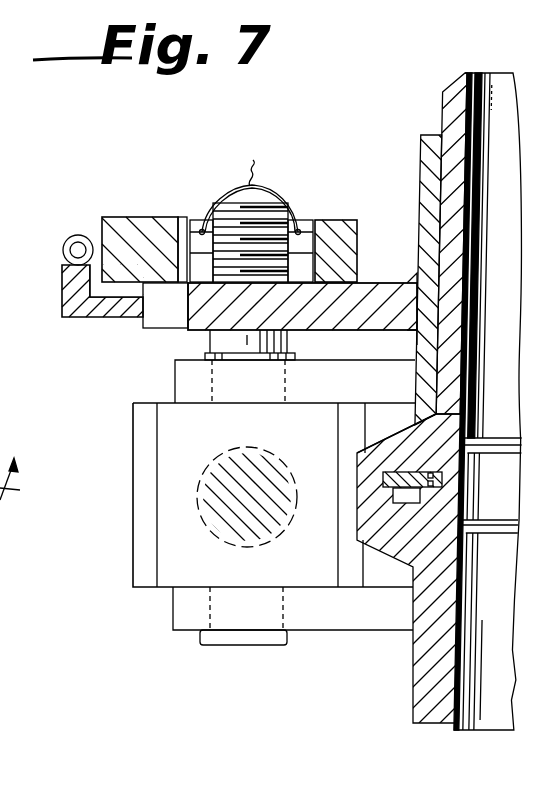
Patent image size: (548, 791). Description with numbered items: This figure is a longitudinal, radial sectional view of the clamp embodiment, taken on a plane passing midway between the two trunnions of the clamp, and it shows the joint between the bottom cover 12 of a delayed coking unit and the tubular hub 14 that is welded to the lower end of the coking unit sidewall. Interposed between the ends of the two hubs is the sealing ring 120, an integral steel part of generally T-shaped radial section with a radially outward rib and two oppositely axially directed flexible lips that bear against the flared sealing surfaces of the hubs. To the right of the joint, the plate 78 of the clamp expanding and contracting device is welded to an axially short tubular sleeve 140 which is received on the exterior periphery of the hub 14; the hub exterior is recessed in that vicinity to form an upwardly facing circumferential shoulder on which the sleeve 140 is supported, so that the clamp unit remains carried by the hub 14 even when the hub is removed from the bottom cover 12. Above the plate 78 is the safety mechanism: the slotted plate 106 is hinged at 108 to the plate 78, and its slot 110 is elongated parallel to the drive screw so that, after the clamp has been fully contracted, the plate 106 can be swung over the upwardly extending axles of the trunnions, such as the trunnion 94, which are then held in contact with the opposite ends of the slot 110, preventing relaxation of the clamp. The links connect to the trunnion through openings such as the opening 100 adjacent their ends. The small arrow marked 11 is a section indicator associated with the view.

The bottom cover 12 is at (420, 665).
The tubular hub 14 is at (442, 110).
The plate 78 is at (381, 287).
The trunnion 94 is at (167, 552).
The opening 100 is at (306, 262).
The slotted plate 106 is at (142, 217).
The hinge 108 is at (62, 258).
The slot 110 is at (298, 231).
The sealing ring 120 is at (482, 525).
The tubular sleeve 140 is at (420, 160).
The section line indicator 11 is at (14, 488).